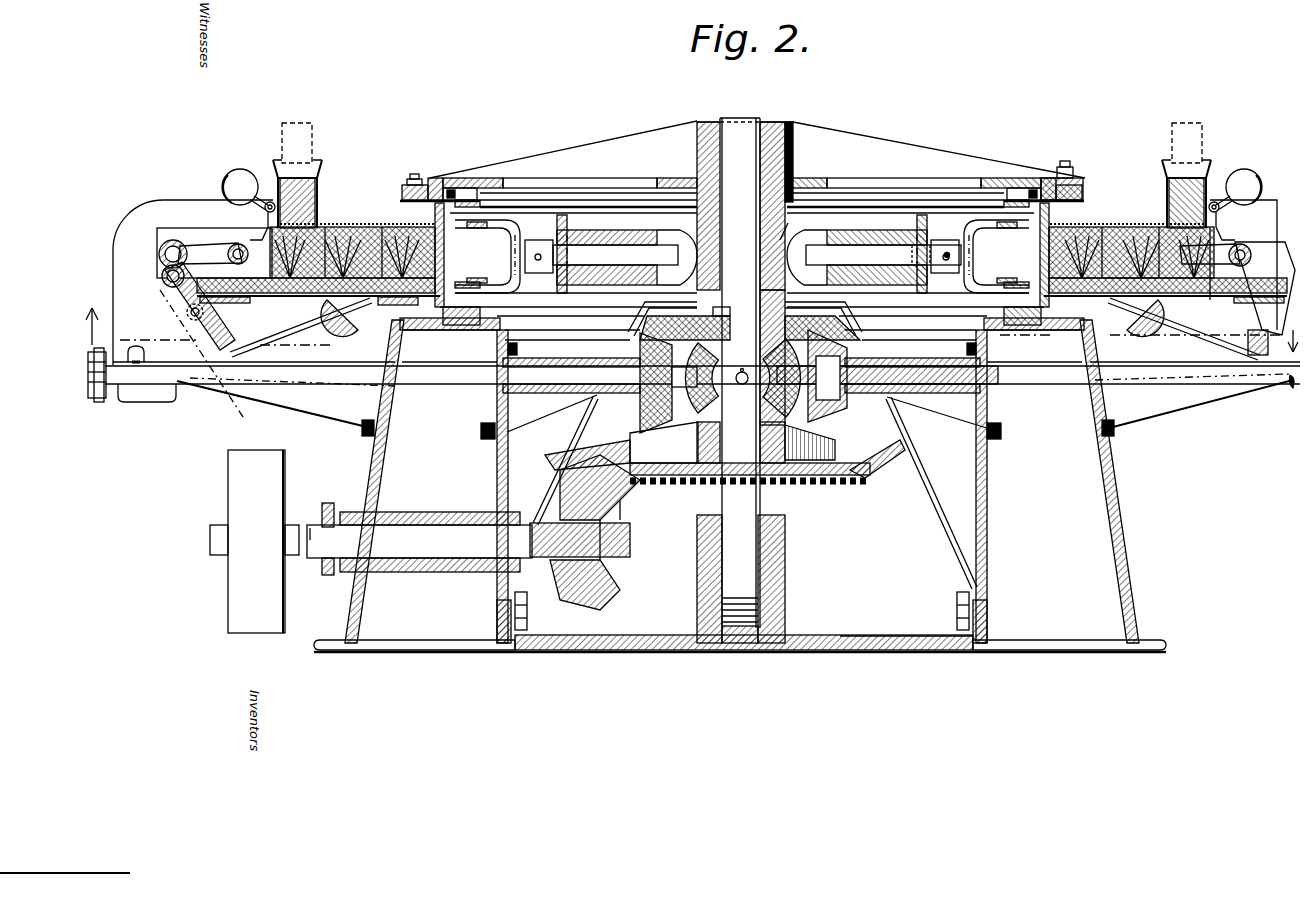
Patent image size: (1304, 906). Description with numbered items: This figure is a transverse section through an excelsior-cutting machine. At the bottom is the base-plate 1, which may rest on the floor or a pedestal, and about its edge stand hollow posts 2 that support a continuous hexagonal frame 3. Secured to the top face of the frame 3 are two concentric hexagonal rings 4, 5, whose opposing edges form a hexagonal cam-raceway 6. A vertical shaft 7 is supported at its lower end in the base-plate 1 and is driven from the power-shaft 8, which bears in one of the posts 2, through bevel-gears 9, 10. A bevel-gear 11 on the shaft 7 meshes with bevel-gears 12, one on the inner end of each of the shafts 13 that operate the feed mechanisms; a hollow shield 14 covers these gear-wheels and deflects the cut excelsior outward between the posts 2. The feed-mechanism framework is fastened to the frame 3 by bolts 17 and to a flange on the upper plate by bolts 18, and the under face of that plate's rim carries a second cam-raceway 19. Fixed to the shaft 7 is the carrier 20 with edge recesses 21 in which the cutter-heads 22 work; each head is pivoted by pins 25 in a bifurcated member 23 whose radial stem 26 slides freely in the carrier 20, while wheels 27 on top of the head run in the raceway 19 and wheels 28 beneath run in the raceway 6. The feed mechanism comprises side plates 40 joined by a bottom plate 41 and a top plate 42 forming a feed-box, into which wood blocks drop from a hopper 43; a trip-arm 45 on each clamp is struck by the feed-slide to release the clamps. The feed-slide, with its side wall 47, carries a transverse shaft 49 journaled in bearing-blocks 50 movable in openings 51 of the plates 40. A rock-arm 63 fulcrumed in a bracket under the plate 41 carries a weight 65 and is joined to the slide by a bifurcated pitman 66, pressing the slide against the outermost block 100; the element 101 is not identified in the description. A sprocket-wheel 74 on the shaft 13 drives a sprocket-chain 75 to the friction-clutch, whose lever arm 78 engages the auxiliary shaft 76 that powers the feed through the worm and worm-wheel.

The base-plate 1 is at (758, 652).
The hollow posts 2 is at (350, 618).
The hexagonal frame 3 is at (693, 356).
The hexagonal ring 4 is at (740, 347).
The hexagonal ring 5 is at (998, 346).
The cam-raceway 6 is at (1040, 362).
The vertical shaft 7 is at (741, 380).
The power-shaft 8 is at (440, 548).
The bevel-gear 9 is at (625, 595).
The bevel-gear 10 is at (600, 440).
The bevel-gear 11 is at (718, 314).
The bevel-gears 12 is at (640, 405).
The shafts 13 is at (445, 380).
The hollow shield 14 is at (563, 462).
The bolts 17 is at (360, 428).
The bolts 18 is at (418, 178).
The cam-raceway 19 is at (490, 188).
The carrier 20 is at (797, 229).
The recesses 21 is at (548, 222).
The cutter-heads 22 is at (742, 250).
The bifurcated member 23 is at (545, 304).
The pins 25 is at (505, 178).
The radial stem 26 is at (612, 258).
The wheels 27 is at (455, 188).
The wheels 28 is at (470, 296).
The side plates 40 is at (360, 215).
The bottom plate 41 is at (1195, 297).
The top plate 42 is at (742, 236).
The hopper 43 is at (322, 178).
The trip-arm 45 is at (265, 214).
The side wall 47 is at (749, 328).
The transverse shaft 49 is at (178, 240).
The bearing-blocks 50 is at (166, 282).
The opening 51 is at (214, 235).
The rock-arm 63 is at (207, 341).
The weight 65 is at (706, 331).
The bifurcated pitman 66 is at (709, 300).
The sprocket-wheel 74 is at (100, 400).
The sprocket-chain 75 is at (790, 130).
The auxiliary shaft 76 is at (1060, 180).
The arm 78 is at (1101, 176).
The block 100 is at (307, 233).
The brush tube 101 is at (293, 177).